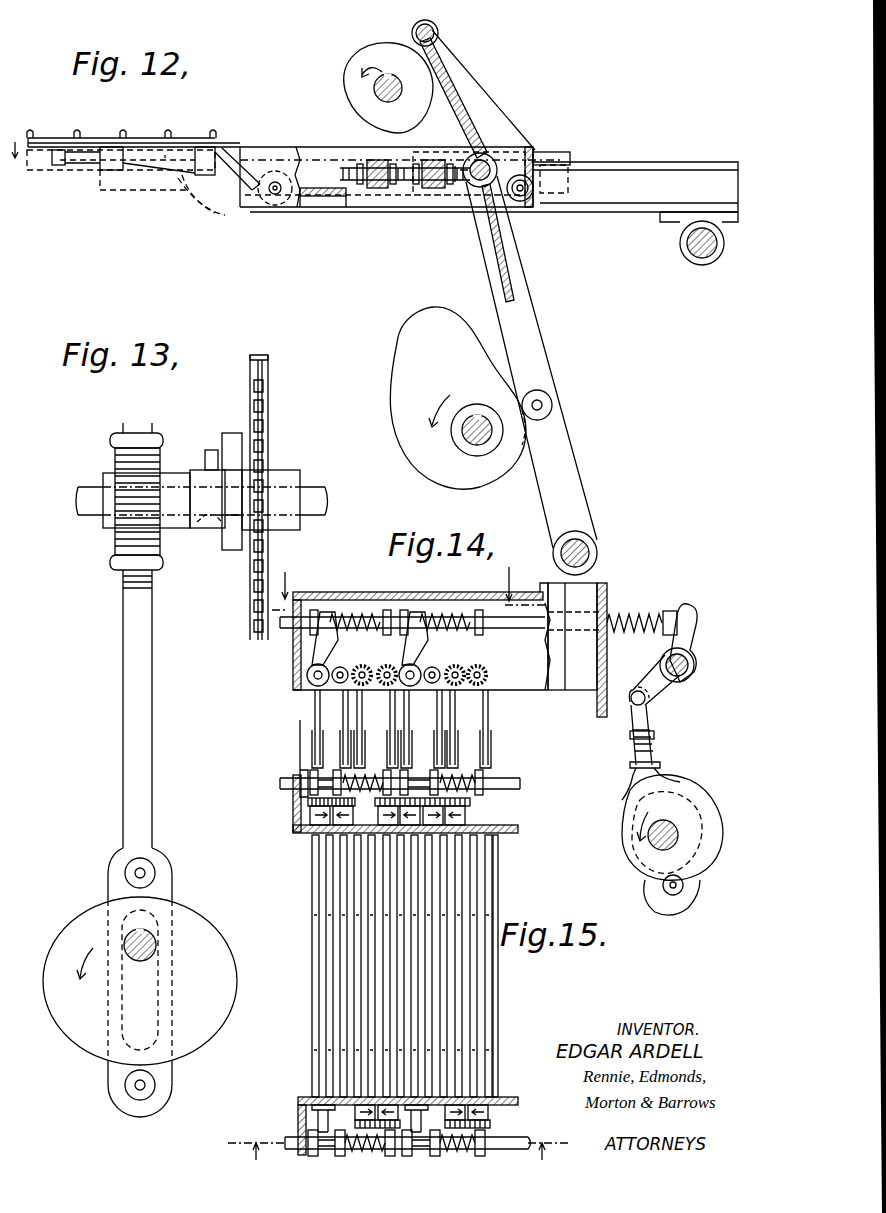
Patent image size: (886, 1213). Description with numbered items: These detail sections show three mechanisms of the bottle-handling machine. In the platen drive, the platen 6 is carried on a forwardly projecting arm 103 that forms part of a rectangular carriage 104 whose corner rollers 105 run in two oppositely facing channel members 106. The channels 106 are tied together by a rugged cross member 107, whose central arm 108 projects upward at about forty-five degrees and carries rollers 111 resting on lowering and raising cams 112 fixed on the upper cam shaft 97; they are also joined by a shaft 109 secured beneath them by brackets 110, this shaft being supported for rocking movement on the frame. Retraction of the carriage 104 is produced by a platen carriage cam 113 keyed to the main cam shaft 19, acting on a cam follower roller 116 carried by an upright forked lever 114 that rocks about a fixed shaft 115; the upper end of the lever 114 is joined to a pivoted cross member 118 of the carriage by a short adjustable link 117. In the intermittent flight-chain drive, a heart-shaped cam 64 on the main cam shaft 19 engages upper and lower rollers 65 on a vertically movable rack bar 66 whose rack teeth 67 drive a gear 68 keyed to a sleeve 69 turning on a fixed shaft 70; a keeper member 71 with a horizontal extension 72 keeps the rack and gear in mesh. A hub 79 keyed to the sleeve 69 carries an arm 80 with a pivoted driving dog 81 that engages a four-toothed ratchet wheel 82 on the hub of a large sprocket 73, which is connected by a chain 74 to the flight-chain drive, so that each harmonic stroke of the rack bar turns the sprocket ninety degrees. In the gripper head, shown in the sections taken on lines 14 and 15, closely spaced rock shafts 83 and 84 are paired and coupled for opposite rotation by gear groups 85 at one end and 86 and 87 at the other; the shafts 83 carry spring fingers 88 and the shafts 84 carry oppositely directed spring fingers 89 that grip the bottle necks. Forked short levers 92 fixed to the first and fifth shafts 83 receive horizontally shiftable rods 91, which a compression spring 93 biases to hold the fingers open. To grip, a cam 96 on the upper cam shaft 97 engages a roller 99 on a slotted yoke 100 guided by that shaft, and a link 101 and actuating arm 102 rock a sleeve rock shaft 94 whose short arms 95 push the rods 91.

In FIG. 12, the platen 6 is at (142, 137).
In FIG. 12, the arm 103 is at (240, 188).
In FIG. 12, the rectangular carriage 104 is at (337, 140).
In FIG. 12, the rollers 105 is at (288, 210).
In FIG. 12, the pivoted cross member 118 is at (375, 188).
In FIG. 12, the short adjustable link 117 is at (427, 188).
In FIG. 12, the cross member 107 is at (558, 150).
In FIG. 12, the channel members 106 is at (650, 162).
In FIG. 12, the brackets 110 is at (678, 222).
In FIG. 12, the shaft 109 is at (690, 255).
In FIG. 12, the rollers 111 is at (437, 28).
In FIG. 12, the central arm 108 is at (455, 70).
In FIG. 12, the lowering and raising cams 112 is at (366, 46).
In FIG. 12, the upper cam shaft 97 is at (374, 90).
In FIG. 14, the upper cam shaft 97 is at (652, 842).
In FIG. 12, the upright forked lever 114 is at (528, 310).
In FIG. 12, the cam follower roller 116 is at (550, 392).
In FIG. 12, the fixed shaft 115 is at (588, 548).
In FIG. 12, the platen carriage cam 113 is at (422, 325).
In FIG. 12, the main cam shaft 19 is at (463, 440).
In FIG. 13, the main cam shaft 19 is at (160, 946).
In FIG. 13, the fixed shaft 70 is at (88, 488).
In FIG. 13, the horizontal extension 72 is at (175, 528).
In FIG. 13, the sleeve 69 is at (178, 480).
In FIG. 13, the hub 79 is at (218, 528).
In FIG. 13, the arm 80 is at (212, 448).
In FIG. 13, the driving dog 81 is at (231, 440).
In FIG. 13, the ratchet wheel 82 is at (236, 553).
In FIG. 13, the chain 74 is at (270, 357).
In FIG. 13, the large sprocket 73 is at (265, 415).
In FIG. 13, the keeper member 71 is at (110, 458).
In FIG. 13, the gear 68 is at (134, 512).
In FIG. 13, the rack teeth 67 is at (138, 575).
In FIG. 13, the rack bar 66 is at (143, 727).
In FIG. 13, the rollers 65 is at (152, 868).
In FIG. 13, the heart-shaped cam 64 is at (205, 925).
In FIG. 14, the section line 15 is at (410, 587).
In FIG. 14, the rock shafts 83 is at (306, 672).
In FIG. 15, the rock shafts 83 is at (410, 943).
In FIG. 14, the rock shafts 84 is at (488, 672).
In FIG. 15, the rock shafts 84 is at (388, 995).
In FIG. 14, the rods 91 is at (525, 620).
In FIG. 15, the rods 91 is at (518, 1140).
In FIG. 14, the short levers 92 is at (415, 650).
In FIG. 15, the short levers 92 is at (382, 1117).
In FIG. 14, the spring fingers 88 is at (357, 710).
In FIG. 15, the spring fingers 88 is at (358, 847).
In FIG. 14, the spring fingers 89 is at (385, 725).
In FIG. 15, the spring fingers 89 is at (385, 868).
In FIG. 14, the gear group 86 is at (306, 800).
In FIG. 14, the gear group 87 is at (470, 800).
In FIG. 14, the compression spring 93 is at (638, 613).
In FIG. 14, the short arms 95 is at (700, 618).
In FIG. 14, the sleeve rock shaft 94 is at (694, 668).
In FIG. 14, the actuating arm 102 is at (655, 680).
In FIG. 14, the link 101 is at (655, 756).
In FIG. 14, the cam 96 is at (702, 800).
In FIG. 14, the slotted yoke 100 is at (645, 878).
In FIG. 14, the roller 99 is at (680, 890).
In FIG. 15, the gear group 85 is at (485, 1122).
In FIG. 15, the section line 14 is at (400, 1138).